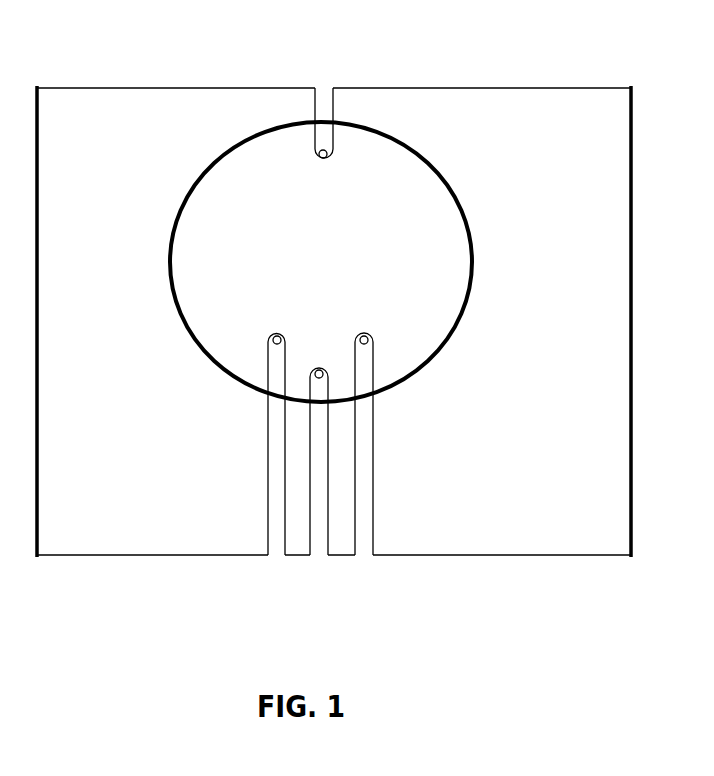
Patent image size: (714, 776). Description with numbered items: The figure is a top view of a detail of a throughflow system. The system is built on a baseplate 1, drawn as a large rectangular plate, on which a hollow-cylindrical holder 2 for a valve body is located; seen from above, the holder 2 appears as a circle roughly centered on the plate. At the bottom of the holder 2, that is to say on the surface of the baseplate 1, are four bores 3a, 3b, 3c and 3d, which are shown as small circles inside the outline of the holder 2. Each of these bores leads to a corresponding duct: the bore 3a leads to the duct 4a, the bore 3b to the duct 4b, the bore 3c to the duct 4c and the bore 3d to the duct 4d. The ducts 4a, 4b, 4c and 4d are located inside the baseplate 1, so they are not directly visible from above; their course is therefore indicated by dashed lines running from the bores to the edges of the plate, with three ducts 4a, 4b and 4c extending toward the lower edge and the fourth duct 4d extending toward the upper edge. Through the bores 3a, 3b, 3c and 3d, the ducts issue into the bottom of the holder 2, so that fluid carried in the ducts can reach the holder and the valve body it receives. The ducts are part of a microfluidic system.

The baseplate 1 is at (143, 378).
The hollow-cylindrical holder 2 is at (443, 177).
The bore 3a is at (277, 340).
The bore 3b is at (319, 374).
The bore 3c is at (364, 340).
The bore 3d is at (317, 157).
The duct 4a is at (277, 535).
The duct 4b is at (318, 522).
The duct 4c is at (362, 533).
The duct 4d is at (323, 148).